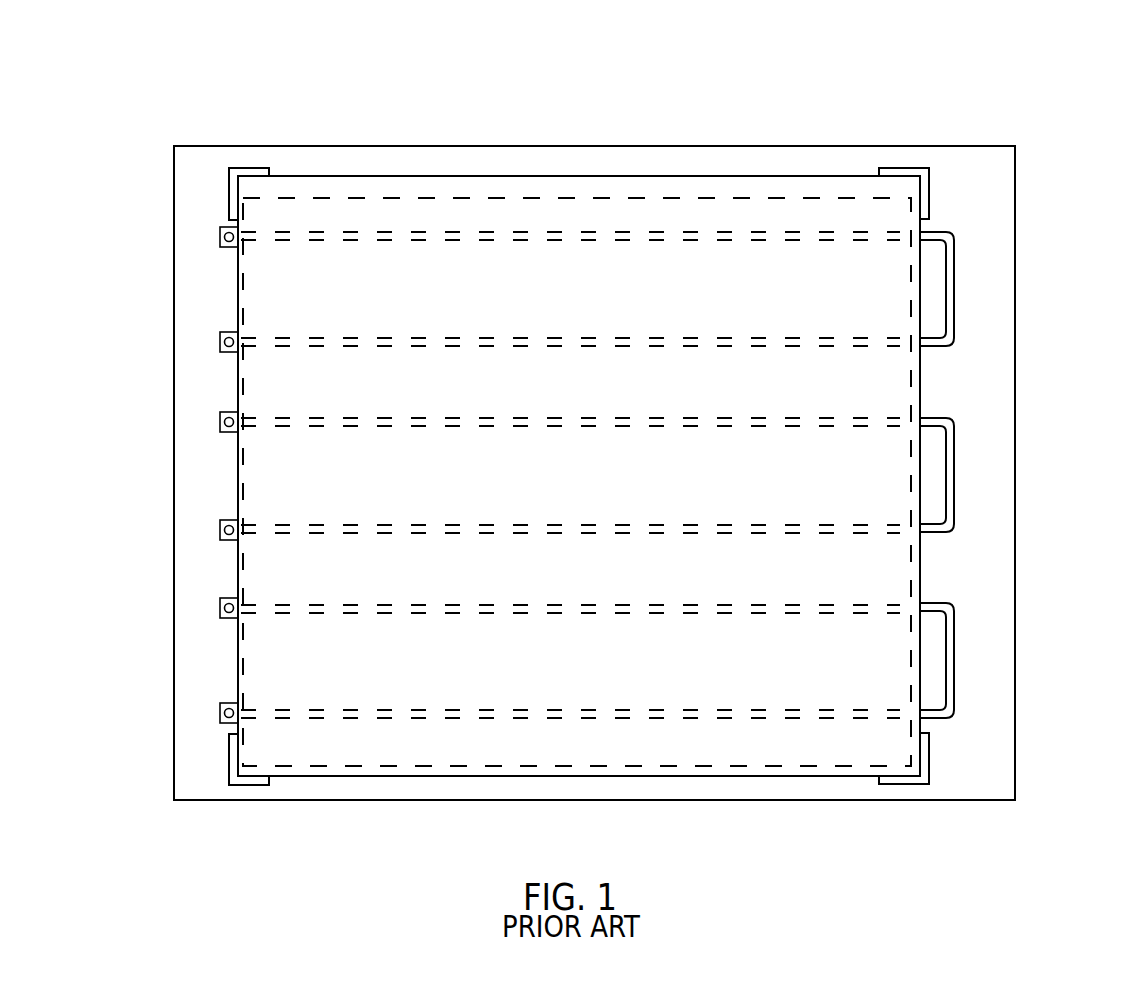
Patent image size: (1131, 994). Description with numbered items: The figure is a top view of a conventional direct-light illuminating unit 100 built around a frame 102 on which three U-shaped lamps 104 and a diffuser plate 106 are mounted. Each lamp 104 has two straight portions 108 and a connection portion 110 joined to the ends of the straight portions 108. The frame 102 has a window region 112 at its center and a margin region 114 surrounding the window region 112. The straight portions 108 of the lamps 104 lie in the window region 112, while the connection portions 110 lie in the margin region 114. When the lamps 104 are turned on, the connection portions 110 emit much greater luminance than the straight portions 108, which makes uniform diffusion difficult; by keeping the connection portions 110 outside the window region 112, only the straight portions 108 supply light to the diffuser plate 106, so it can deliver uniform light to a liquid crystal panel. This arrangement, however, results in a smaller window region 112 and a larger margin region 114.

The direct-light illuminating unit 100 is at (797, 110).
The frame 102 is at (174, 177).
The lamp 104 is at (522, 398).
The diffuser plate 106 is at (420, 777).
The straight portion 108 is at (280, 240).
The connection portion 110 is at (950, 273).
The window region 112 is at (388, 198).
The margin region 114 is at (335, 158).